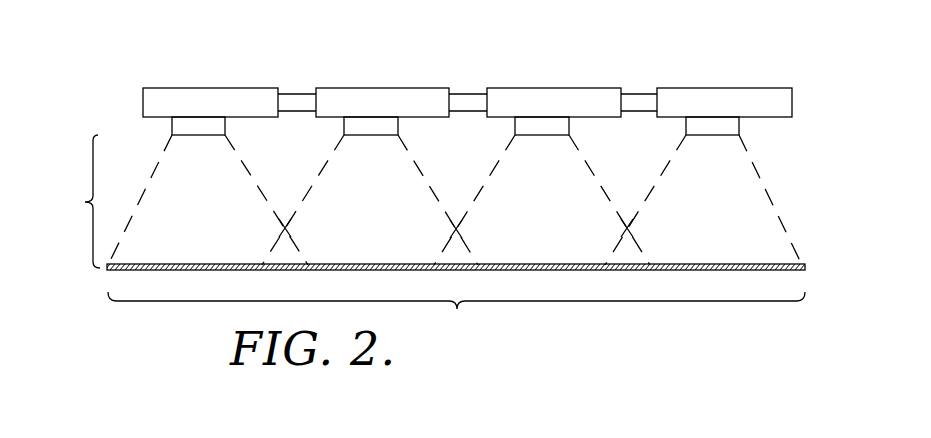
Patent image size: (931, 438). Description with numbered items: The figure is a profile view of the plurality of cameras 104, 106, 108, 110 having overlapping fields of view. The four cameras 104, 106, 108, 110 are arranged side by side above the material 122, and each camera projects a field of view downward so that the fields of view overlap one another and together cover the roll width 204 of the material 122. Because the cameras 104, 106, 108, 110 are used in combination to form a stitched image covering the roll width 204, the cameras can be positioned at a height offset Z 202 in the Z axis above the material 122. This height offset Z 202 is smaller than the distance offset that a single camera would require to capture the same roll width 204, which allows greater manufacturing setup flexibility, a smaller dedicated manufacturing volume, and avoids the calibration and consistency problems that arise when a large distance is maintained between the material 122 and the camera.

The camera 104 is at (165, 86).
The camera 106 is at (352, 86).
The camera 108 is at (522, 86).
The camera 110 is at (695, 86).
The material 122 is at (116, 271).
The height offset Z 202 is at (65, 194).
The roll width 204 is at (460, 343).